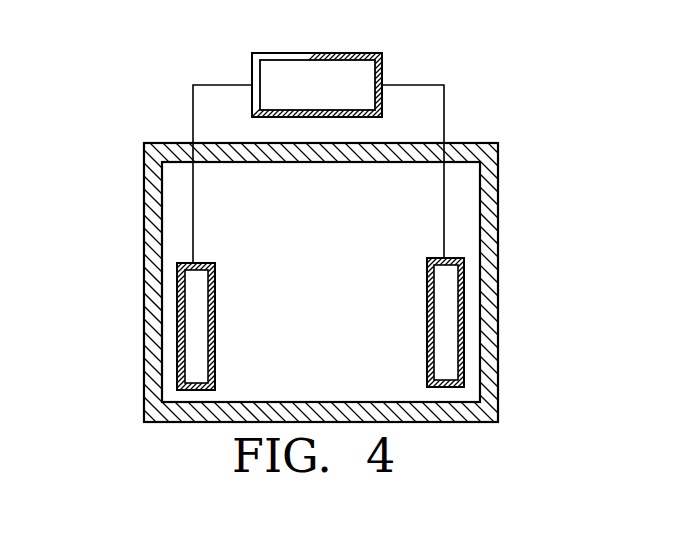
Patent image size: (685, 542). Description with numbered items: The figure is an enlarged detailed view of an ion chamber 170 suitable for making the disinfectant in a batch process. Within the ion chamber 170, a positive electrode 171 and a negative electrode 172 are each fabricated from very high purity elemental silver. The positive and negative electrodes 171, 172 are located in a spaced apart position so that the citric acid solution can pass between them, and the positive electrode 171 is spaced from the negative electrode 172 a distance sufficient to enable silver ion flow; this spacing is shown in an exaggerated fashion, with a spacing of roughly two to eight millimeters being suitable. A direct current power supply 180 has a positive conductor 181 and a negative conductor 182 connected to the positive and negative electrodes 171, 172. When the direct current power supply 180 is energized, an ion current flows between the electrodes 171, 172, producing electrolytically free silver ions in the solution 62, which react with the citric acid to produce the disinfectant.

The ion chamber 170 is at (502, 180).
The direct current power supply 180 is at (343, 52).
The positive conductor 181 is at (193, 121).
The negative conductor 182 is at (443, 110).
The positive electrode 171 is at (188, 324).
The negative electrode 172 is at (453, 307).
The electrolyte solution 62 is at (390, 390).